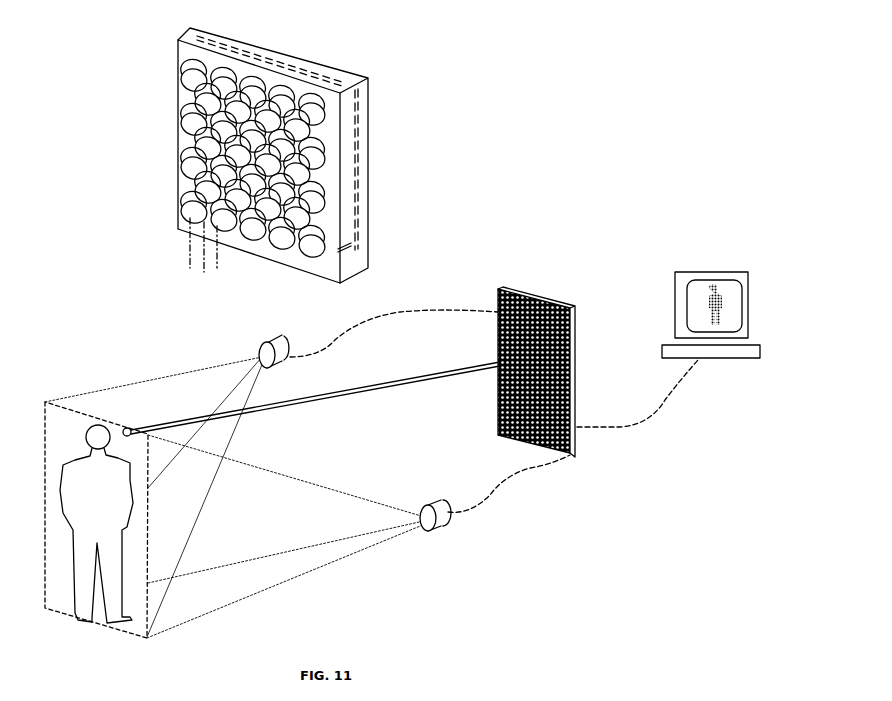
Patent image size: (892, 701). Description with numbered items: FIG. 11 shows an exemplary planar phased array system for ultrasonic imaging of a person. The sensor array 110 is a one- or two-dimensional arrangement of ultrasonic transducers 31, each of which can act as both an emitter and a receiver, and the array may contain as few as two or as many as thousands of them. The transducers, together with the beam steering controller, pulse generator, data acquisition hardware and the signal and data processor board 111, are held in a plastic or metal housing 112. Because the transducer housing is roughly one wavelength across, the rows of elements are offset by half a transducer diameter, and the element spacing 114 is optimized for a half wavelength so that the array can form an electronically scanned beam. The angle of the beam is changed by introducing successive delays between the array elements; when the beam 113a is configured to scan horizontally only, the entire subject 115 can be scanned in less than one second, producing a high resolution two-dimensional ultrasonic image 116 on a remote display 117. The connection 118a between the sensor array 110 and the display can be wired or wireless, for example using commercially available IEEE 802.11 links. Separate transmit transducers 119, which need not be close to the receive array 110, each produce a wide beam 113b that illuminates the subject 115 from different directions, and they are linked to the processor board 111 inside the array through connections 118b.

The sensor array 110 is at (344, 233).
The signal and data processor board 111 is at (363, 148).
The housing 112 is at (360, 260).
The ultrasonic transducer 31 is at (188, 203).
The element spacing 114 is at (213, 271).
The beam 113a is at (340, 388).
The wide beam 113b is at (128, 383).
The subject 115 is at (73, 465).
The two-dimensional ultrasonic image 116 is at (714, 292).
The remote display 117 is at (702, 299).
The connection 118a is at (665, 402).
The connections 118b is at (428, 307).
The transmit transducers 119 is at (288, 350).